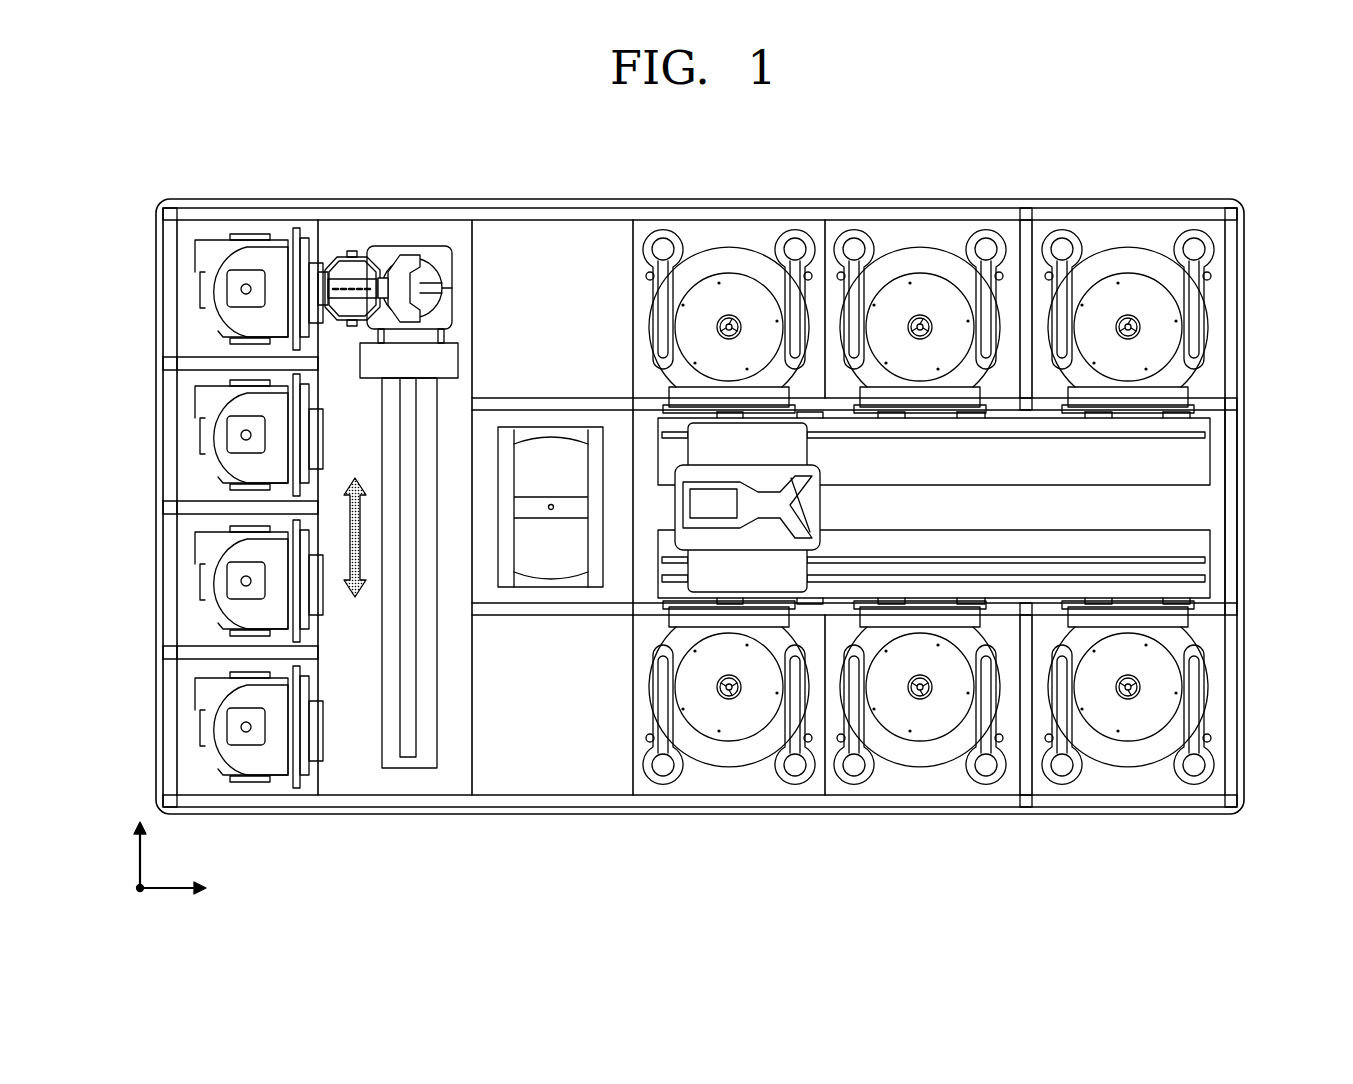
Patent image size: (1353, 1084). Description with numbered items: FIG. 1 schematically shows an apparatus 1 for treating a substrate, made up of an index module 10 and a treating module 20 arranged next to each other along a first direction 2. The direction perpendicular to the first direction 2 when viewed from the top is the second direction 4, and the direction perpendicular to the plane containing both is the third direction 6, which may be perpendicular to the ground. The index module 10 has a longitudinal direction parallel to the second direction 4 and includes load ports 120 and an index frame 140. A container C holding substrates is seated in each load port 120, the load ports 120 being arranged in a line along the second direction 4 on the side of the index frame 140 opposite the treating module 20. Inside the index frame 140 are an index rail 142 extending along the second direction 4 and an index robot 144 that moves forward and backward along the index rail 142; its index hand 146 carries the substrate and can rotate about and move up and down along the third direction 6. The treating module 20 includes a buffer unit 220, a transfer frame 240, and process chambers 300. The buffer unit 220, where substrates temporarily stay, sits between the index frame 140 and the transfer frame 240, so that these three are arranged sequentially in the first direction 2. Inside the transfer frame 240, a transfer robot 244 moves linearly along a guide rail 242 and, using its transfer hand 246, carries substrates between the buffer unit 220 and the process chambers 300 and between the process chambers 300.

The apparatus for treating a substrate 1 is at (1071, 147).
The index module 10 is at (377, 883).
The treating module 20 is at (527, 883).
The container C is at (248, 262).
The load port 120 is at (243, 513).
The index frame 140 is at (416, 513).
The index rail 142 is at (435, 393).
The index robot 144 is at (405, 235).
The index hand 146 is at (352, 262).
The buffer unit 220 is at (556, 606).
The transfer frame 240 is at (993, 513).
The guide rail 242 is at (1200, 461).
The transfer robot 244 is at (755, 410).
The transfer hand 246 is at (783, 517).
The process chamber 300 is at (735, 808).
The first direction 2 is at (165, 890).
The second direction 4 is at (140, 853).
The third direction 6 is at (140, 892).